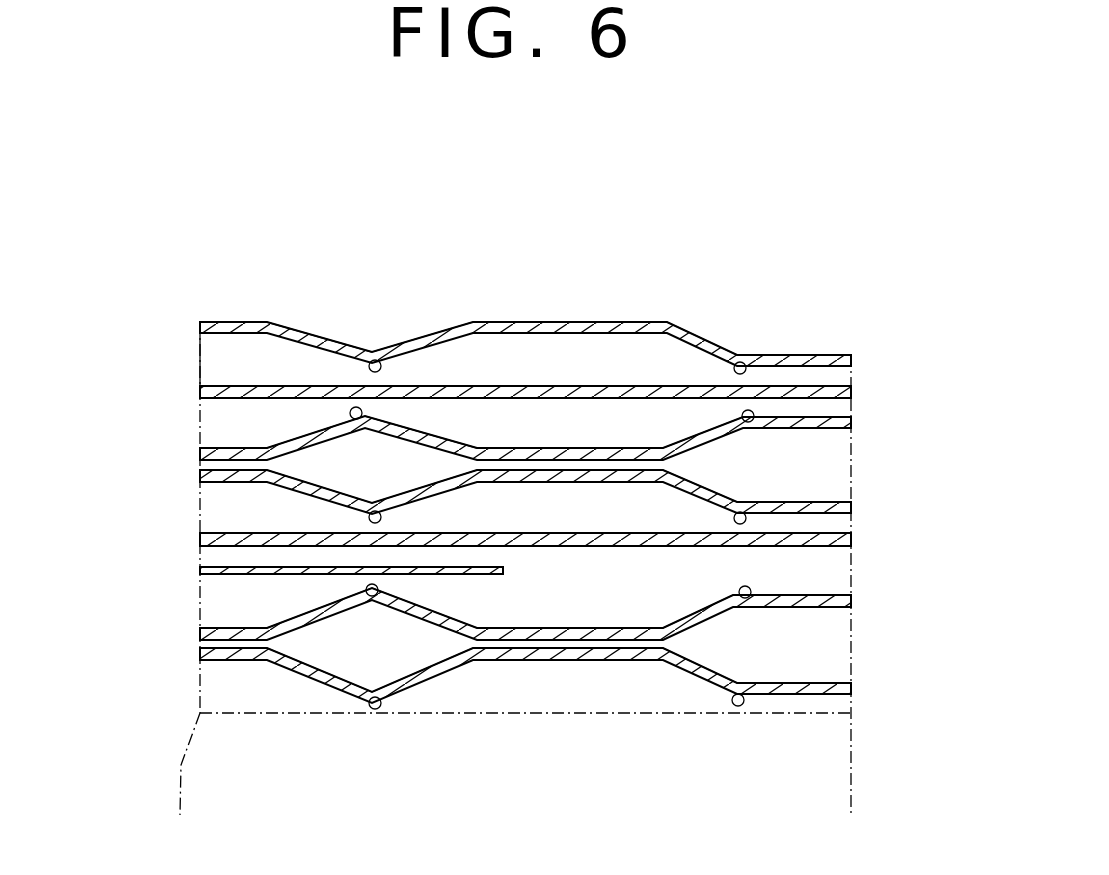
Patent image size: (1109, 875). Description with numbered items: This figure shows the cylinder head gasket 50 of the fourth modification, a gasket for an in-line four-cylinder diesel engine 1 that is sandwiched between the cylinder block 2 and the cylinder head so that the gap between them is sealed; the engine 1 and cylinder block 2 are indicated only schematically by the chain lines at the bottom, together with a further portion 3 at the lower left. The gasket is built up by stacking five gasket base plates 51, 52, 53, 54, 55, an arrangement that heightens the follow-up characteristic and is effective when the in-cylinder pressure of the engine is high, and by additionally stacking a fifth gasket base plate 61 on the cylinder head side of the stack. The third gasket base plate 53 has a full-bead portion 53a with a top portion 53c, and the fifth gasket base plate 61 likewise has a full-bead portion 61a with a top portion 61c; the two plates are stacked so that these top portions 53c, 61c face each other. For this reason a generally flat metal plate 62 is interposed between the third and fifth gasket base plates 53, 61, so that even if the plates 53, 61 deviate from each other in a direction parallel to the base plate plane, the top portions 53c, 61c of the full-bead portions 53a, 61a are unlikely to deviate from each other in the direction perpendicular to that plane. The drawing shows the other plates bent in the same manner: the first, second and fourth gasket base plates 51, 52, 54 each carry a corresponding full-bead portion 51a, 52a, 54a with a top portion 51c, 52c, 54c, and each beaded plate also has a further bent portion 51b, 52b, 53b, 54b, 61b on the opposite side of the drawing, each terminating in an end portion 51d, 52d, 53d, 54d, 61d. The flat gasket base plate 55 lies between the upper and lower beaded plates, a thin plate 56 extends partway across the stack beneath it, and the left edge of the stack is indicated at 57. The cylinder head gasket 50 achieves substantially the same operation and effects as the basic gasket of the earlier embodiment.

The engine 1 is at (860, 706).
The cylinder block 2 is at (855, 737).
The adjacent member 3 is at (180, 795).
The cylinder head gasket 50 is at (878, 330).
The gasket base plate 51 is at (543, 490).
The inclined portion of fin plate 51 51a is at (432, 492).
The inclined portion of fin plate 51 51b is at (700, 508).
The bent portion of fin plate 51 51c is at (375, 508).
The bent portion of fin plate 51 51d is at (745, 510).
The gasket base plate 52 is at (543, 622).
The inclined portion of fin plate 52 52a is at (433, 607).
The inclined portion of fin plate 52 52b is at (703, 610).
The bent portion of fin plate 52 52c is at (380, 606).
The bent portion of fin plate 52 52d is at (742, 592).
The third gasket base plate 53 is at (543, 448).
The full-bead portion 53a is at (437, 437).
The inclined portion of fin plate 53 53b is at (712, 430).
The top portion 53c is at (362, 410).
The bent portion of fin plate 53 53d is at (760, 426).
The gasket base plate 54 is at (543, 667).
The inclined portion of fin plate 54 54a is at (432, 680).
The inclined portion of fin plate 54 54b is at (710, 690).
The bent portion of fin plate 54 54c is at (350, 698).
The bent portion of fin plate 54 54d is at (752, 693).
The gasket base plate 55 is at (200, 540).
The intermediate plate 56 is at (200, 569).
The end portion 57 is at (200, 355).
The fifth gasket base plate 61 is at (558, 322).
The full-bead portion 61a is at (437, 330).
The inclined portion of fin plate 61 61b is at (693, 335).
The top portion 61c is at (377, 360).
The bent portion of fin plate 61 61d is at (757, 365).
The generally flat metal plate 62 is at (200, 391).